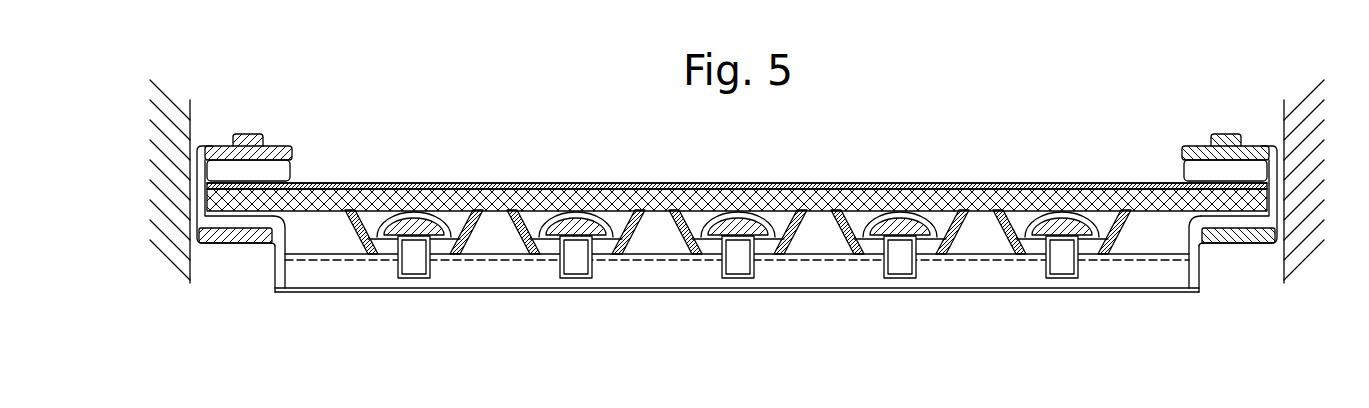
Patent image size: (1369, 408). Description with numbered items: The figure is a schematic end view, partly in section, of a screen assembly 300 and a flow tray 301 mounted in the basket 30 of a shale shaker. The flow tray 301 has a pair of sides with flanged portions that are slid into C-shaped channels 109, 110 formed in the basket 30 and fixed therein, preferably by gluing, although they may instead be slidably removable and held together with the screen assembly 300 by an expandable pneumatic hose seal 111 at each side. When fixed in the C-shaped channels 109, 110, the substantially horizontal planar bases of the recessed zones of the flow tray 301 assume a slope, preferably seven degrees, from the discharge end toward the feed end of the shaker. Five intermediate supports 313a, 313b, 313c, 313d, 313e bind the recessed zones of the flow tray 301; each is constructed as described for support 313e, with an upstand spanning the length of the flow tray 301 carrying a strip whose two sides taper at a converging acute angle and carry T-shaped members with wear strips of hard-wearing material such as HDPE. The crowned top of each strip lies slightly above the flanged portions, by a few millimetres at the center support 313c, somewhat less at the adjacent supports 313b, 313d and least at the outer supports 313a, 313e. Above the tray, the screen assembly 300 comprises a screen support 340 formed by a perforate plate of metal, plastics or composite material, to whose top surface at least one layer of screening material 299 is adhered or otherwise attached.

The basket 30 is at (190, 100).
The C-shaped channel 109 is at (223, 247).
The C-shaped channel 110 is at (1262, 148).
The expandable pneumatic hose seal 111 is at (290, 170).
The layer of screening material 299 is at (902, 185).
The screen assembly 300 is at (641, 182).
The screen support 340 is at (558, 183).
The flow tray 301 is at (1083, 292).
The intermediate support 313a is at (1048, 263).
The intermediate support 313b is at (886, 263).
The intermediate support 313c is at (724, 263).
The intermediate support 313d is at (562, 263).
The intermediate support 313e is at (400, 263).